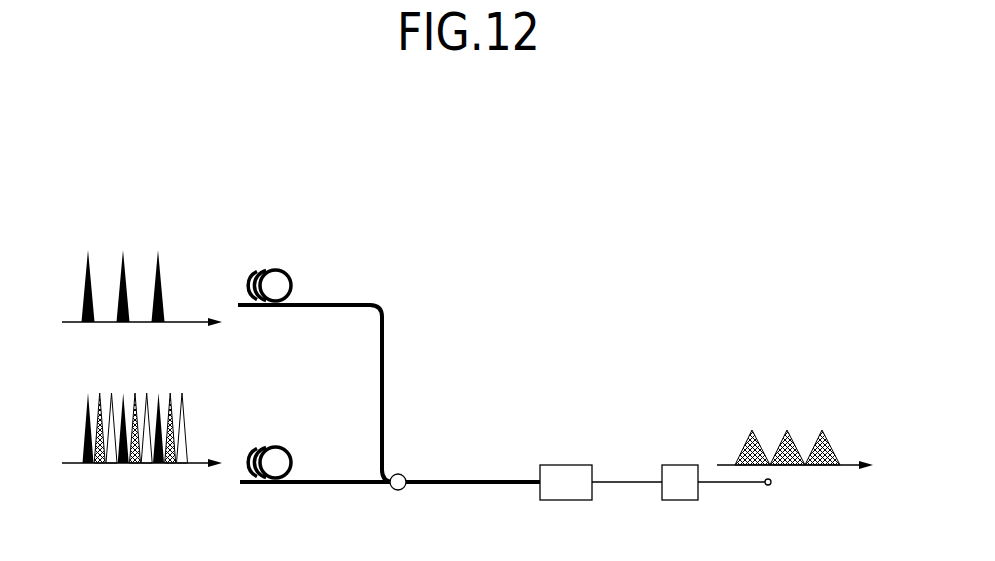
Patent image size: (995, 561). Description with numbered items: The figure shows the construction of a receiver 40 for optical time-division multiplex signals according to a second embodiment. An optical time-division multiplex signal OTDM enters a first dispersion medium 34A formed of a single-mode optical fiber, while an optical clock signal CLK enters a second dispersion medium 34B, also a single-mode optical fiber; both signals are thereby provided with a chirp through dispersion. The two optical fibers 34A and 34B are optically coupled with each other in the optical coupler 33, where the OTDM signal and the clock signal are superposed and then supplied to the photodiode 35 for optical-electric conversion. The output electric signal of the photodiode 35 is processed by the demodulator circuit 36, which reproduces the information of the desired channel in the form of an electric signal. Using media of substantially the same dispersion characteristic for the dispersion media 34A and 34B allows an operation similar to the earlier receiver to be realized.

The receiver 40 is at (432, 174).
The second dispersion medium 34B is at (292, 283).
The first dispersion medium 34A is at (292, 460).
The optical coupler 33 is at (398, 474).
The photodiode 35 is at (568, 500).
The demodulator circuit 36 is at (678, 500).